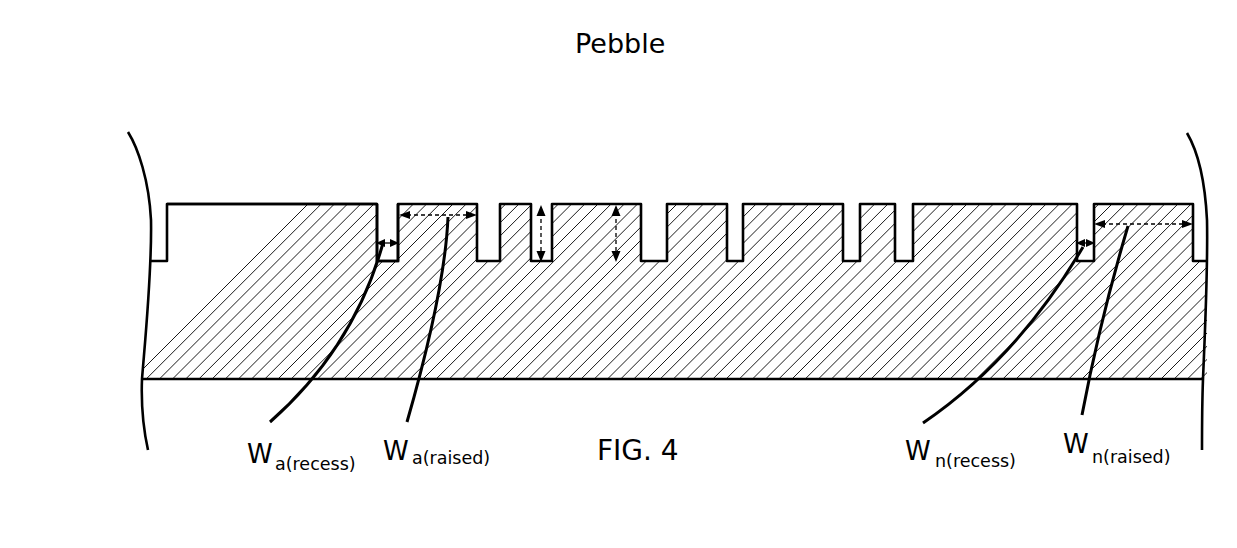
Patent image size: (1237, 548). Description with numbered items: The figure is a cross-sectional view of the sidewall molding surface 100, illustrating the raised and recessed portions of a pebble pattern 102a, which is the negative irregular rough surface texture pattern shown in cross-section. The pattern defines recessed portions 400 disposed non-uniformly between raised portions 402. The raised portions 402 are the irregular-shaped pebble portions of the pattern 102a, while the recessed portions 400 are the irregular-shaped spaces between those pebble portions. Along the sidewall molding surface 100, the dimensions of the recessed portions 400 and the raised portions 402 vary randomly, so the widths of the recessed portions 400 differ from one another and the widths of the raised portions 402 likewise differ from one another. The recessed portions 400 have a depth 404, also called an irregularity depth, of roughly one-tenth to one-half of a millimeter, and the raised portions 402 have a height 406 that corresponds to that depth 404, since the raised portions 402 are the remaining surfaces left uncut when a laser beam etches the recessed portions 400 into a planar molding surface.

The sidewall molding surface 100 is at (1013, 203).
The pebble pattern 102a is at (902, 143).
The recessed portions 400 is at (385, 200).
The raised portions 402 is at (268, 202).
The depth 404 is at (542, 237).
The height 406 is at (618, 227).